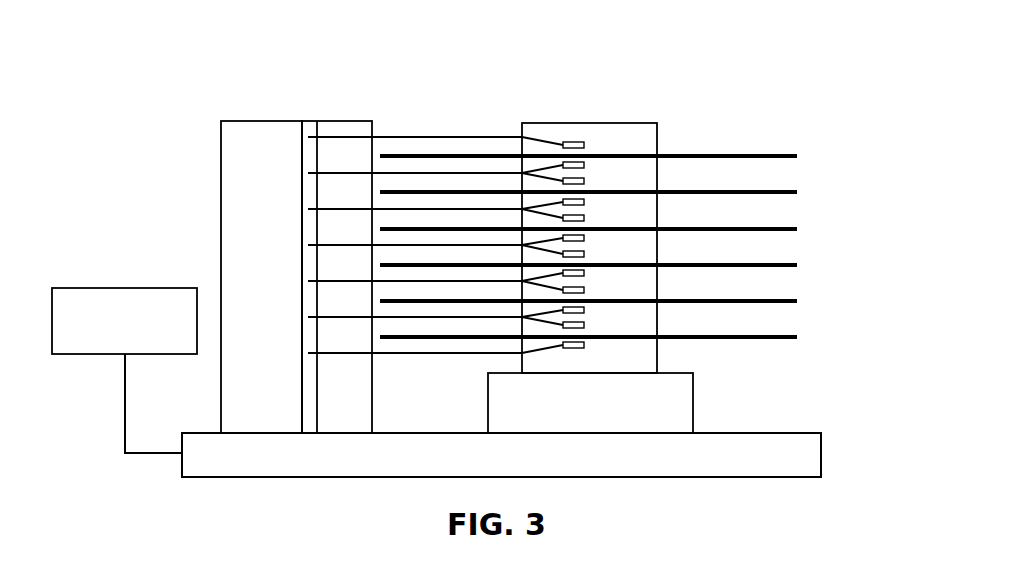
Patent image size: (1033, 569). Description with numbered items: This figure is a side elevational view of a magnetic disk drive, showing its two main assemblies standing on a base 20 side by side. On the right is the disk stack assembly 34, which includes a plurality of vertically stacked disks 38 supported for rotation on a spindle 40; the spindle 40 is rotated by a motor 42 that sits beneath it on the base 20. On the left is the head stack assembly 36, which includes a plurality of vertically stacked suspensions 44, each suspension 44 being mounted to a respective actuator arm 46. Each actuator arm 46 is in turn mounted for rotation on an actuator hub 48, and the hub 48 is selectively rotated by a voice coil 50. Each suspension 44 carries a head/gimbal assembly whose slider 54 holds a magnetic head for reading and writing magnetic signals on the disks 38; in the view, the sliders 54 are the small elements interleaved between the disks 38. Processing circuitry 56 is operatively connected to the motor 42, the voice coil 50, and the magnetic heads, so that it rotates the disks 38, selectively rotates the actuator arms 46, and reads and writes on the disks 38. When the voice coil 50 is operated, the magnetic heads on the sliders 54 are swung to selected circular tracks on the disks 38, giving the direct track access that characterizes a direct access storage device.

The substrate 20 is at (808, 458).
The disk stack assembly 34 is at (733, 127).
The head stack assembly 36 is at (418, 110).
The disks 38 is at (792, 195).
The spindle 40 is at (628, 123).
The motor 42 is at (690, 400).
The suspensions 44 is at (548, 176).
The actuator arms 46 is at (478, 137).
The actuator hub 48 is at (341, 121).
The voice coil 50 is at (221, 203).
The slider 54 is at (585, 146).
The processing circuitry 56 is at (95, 288).